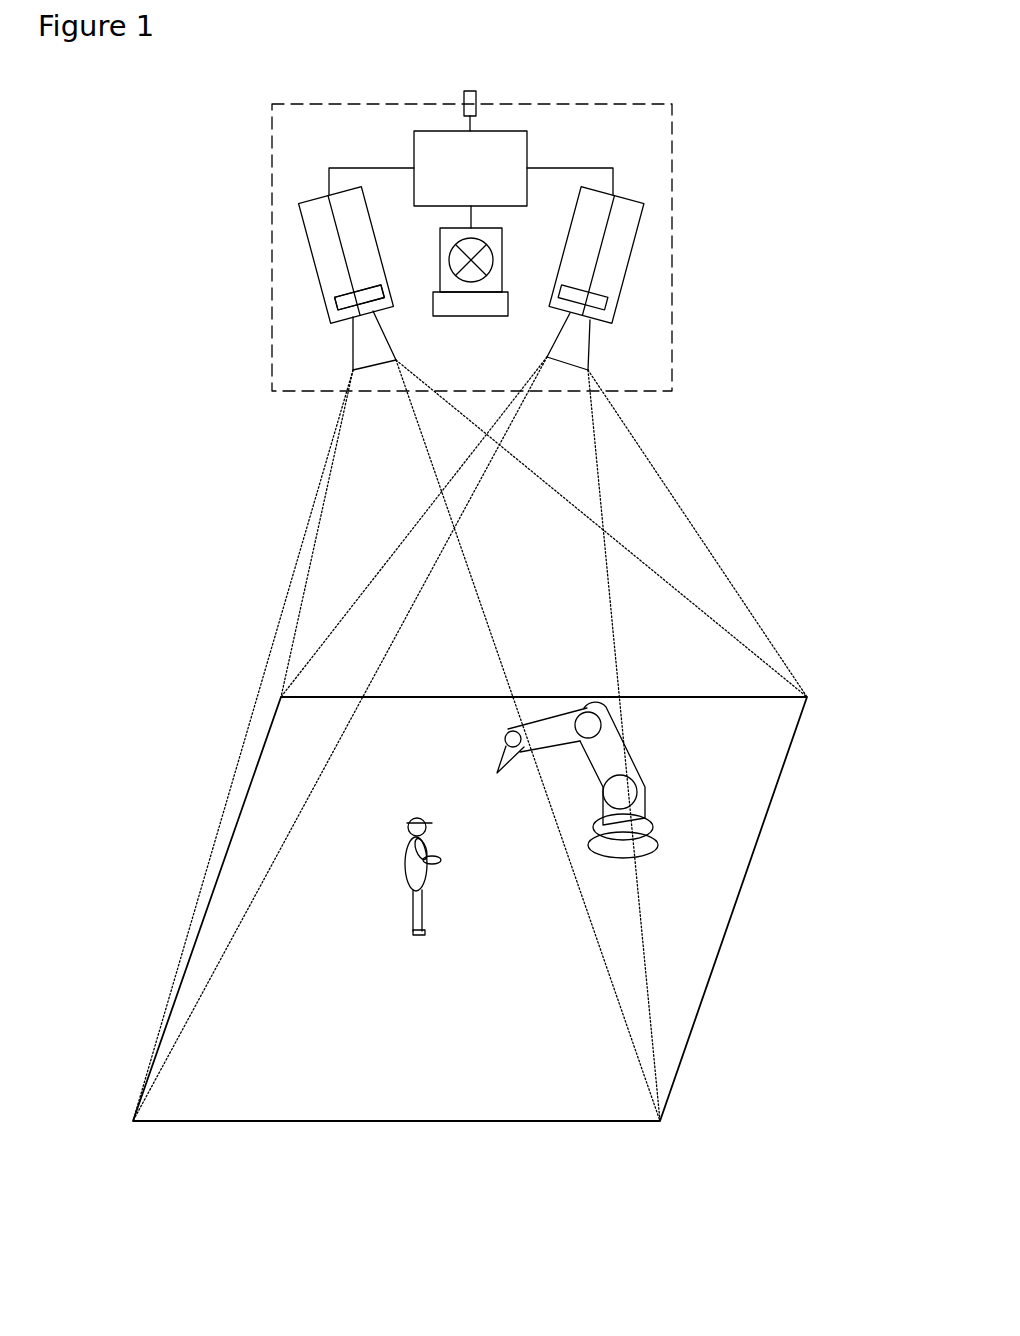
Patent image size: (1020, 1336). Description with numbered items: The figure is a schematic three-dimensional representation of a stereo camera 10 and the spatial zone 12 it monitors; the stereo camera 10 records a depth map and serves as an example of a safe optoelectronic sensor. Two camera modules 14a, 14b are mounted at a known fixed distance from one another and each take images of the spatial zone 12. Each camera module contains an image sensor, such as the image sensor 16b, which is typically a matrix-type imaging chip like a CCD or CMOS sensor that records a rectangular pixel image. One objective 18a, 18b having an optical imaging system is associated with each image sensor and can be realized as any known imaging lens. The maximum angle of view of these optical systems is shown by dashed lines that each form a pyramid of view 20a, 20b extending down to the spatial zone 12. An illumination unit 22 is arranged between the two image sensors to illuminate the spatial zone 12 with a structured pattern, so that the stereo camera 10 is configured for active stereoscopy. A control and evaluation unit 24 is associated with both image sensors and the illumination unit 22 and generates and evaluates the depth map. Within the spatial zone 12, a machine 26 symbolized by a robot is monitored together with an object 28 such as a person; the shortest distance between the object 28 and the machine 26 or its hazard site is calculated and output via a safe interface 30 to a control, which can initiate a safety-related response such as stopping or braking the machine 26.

The stereo camera 10 is at (503, 218).
The spatial zone 12 is at (508, 833).
The camera module 14a is at (284, 255).
The camera module 14b is at (654, 255).
The image sensor 16b is at (653, 315).
The objective 18a is at (300, 371).
The objective 18b is at (641, 383).
The pyramid of view 20a is at (470, 740).
The pyramid of view 20b is at (472, 739).
The illumination unit 22 is at (492, 261).
The control and evaluation unit 24 is at (471, 130).
The machine 26 is at (614, 780).
The object 28 is at (410, 919).
The safe interface 30 is at (500, 87).